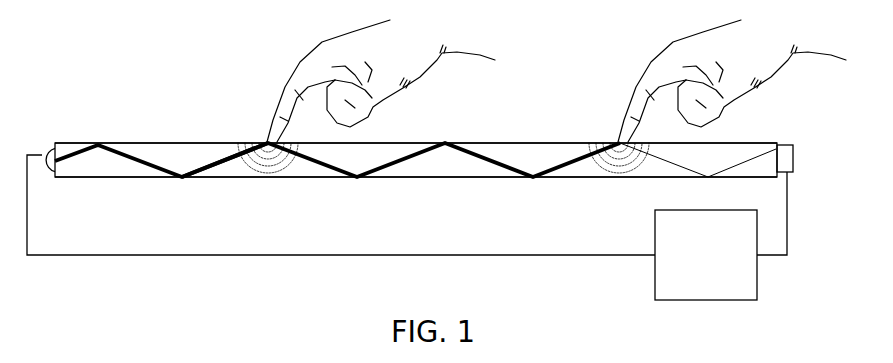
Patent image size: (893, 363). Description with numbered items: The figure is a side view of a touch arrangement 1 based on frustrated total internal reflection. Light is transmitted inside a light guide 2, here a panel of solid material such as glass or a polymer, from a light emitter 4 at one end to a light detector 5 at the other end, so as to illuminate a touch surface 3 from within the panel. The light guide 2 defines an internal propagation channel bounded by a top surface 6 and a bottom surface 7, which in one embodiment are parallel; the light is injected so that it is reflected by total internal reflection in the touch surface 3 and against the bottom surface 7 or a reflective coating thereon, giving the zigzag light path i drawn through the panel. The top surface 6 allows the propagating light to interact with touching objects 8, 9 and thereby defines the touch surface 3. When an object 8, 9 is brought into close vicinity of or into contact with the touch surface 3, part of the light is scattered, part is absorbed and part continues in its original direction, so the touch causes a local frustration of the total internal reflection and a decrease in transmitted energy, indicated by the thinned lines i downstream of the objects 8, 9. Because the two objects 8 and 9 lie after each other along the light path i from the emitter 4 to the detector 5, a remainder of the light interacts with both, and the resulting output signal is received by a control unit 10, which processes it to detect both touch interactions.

The touch arrangement 1 is at (148, 100).
The light guide 2 is at (93, 165).
The touch surface 3 is at (197, 142).
The light emitter 4 is at (48, 152).
The light detector 5 is at (788, 153).
The top surface 6 is at (120, 140).
The bottom surface 7 is at (770, 178).
The touching object 8 is at (338, 51).
The touching object 9 is at (688, 51).
The control unit 10 is at (407, 227).
The light path i is at (207, 163).